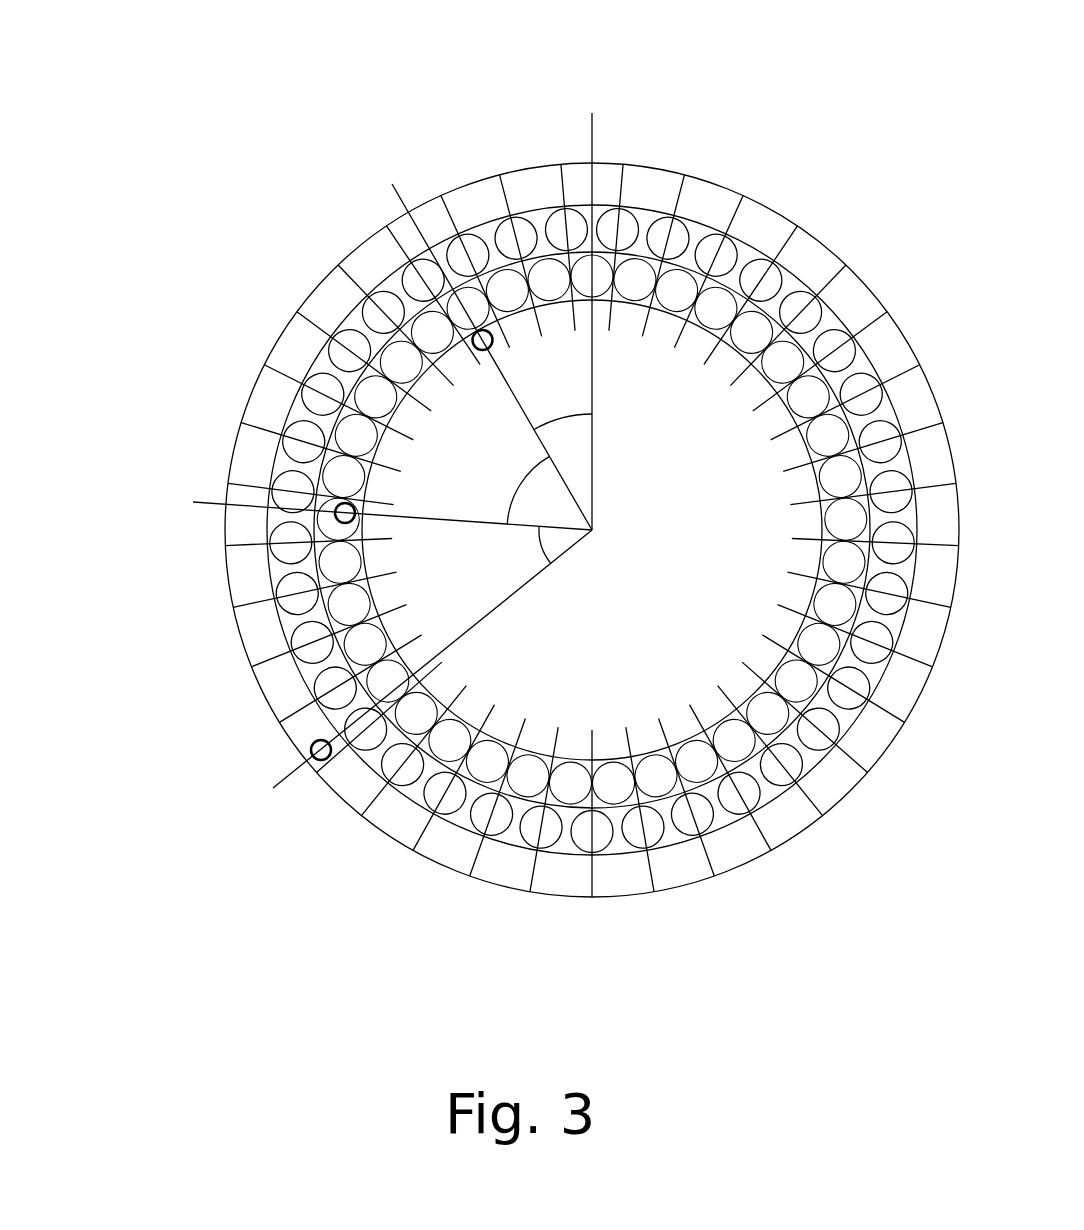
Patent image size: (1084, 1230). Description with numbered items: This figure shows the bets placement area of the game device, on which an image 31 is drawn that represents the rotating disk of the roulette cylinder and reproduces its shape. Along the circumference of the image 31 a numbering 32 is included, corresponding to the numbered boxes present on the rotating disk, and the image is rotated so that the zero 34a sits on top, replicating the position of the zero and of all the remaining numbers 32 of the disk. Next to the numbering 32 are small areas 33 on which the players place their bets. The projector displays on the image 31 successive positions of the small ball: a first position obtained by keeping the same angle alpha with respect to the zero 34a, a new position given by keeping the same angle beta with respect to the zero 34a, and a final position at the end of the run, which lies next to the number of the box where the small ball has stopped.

The image 31 is at (860, 135).
The numbering 32 is at (607, 880).
The small areas 33 is at (870, 650).
The zero 34a is at (599, 181).